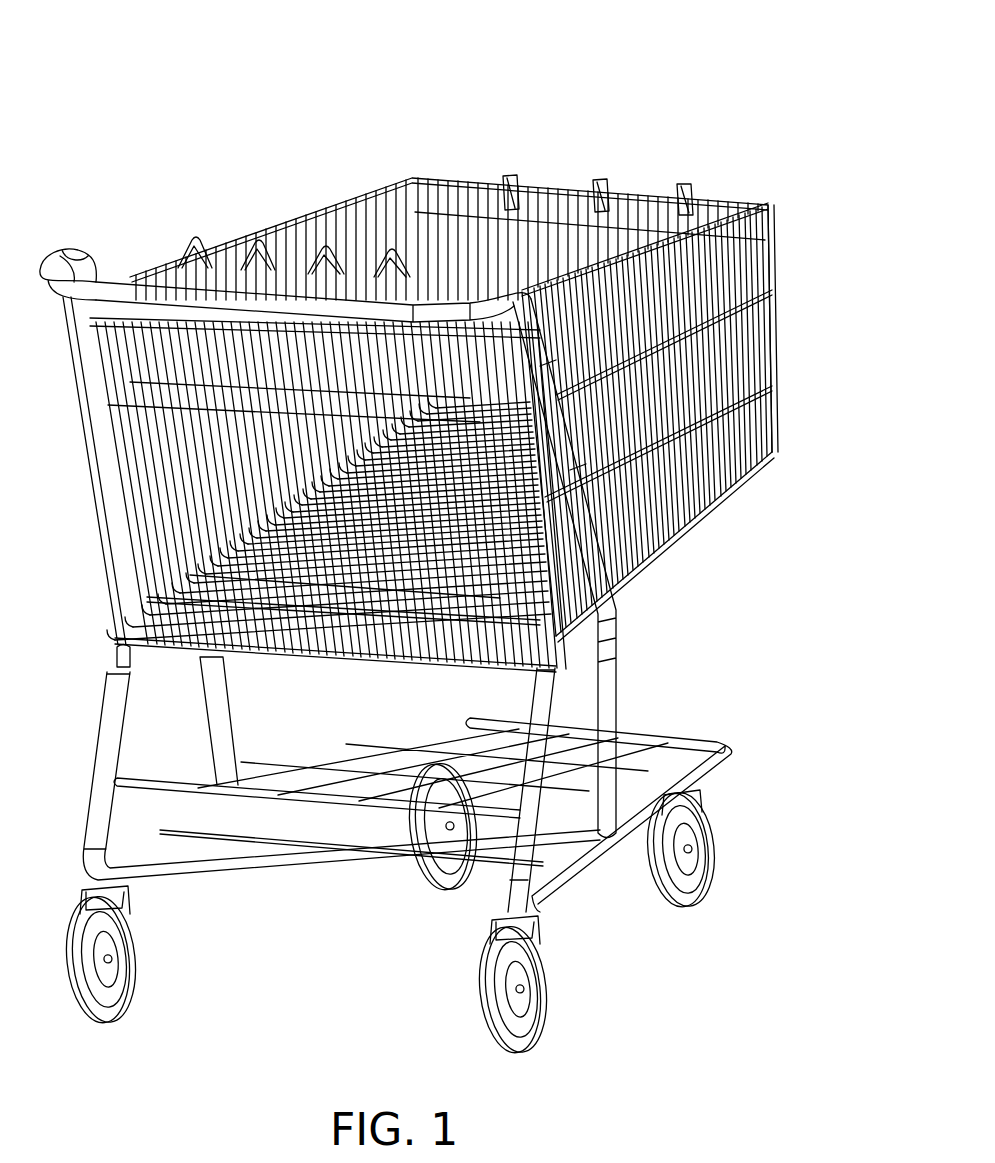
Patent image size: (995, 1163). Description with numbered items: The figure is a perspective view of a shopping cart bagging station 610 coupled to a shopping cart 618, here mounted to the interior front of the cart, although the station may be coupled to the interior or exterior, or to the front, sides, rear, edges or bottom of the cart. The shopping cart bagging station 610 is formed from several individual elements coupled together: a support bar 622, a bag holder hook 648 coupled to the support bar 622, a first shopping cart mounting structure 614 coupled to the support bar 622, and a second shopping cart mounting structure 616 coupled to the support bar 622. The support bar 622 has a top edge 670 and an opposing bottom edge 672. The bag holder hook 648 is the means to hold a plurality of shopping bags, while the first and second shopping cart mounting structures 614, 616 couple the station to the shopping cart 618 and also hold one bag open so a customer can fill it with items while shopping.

The shopping cart bagging station 610 is at (553, 88).
The first shopping cart mounting structure 614 is at (490, 183).
The second shopping cart mounting structure 616 is at (712, 195).
The shopping cart 618 is at (272, 228).
The support bar 622 is at (655, 195).
The bag holder hook 648 is at (597, 185).
The top edge 670 is at (565, 185).
The bottom edge 672 is at (770, 300).